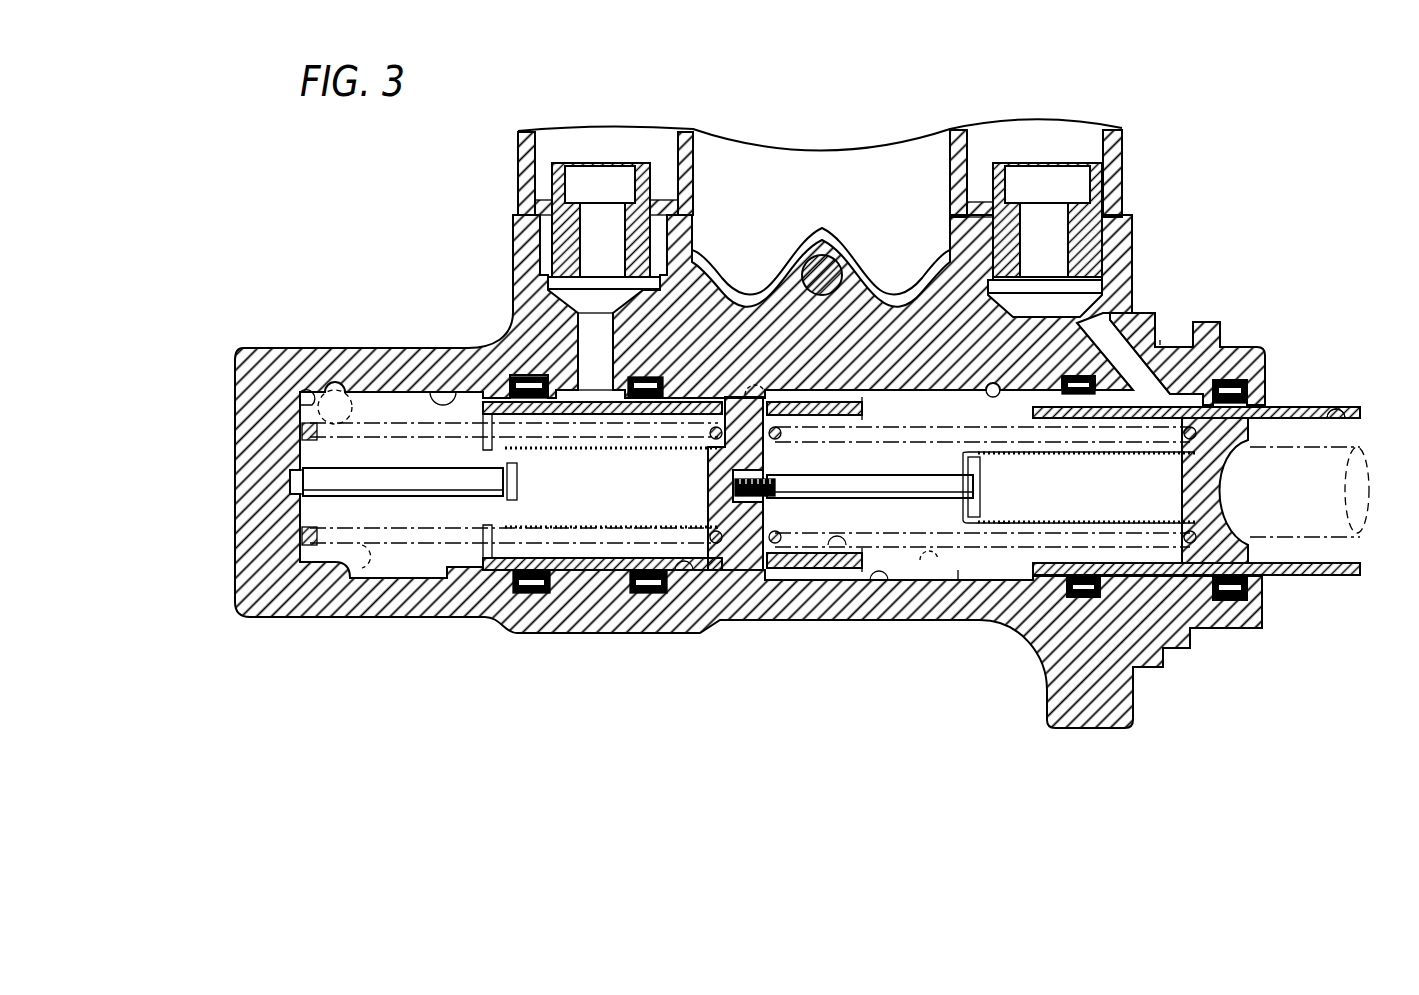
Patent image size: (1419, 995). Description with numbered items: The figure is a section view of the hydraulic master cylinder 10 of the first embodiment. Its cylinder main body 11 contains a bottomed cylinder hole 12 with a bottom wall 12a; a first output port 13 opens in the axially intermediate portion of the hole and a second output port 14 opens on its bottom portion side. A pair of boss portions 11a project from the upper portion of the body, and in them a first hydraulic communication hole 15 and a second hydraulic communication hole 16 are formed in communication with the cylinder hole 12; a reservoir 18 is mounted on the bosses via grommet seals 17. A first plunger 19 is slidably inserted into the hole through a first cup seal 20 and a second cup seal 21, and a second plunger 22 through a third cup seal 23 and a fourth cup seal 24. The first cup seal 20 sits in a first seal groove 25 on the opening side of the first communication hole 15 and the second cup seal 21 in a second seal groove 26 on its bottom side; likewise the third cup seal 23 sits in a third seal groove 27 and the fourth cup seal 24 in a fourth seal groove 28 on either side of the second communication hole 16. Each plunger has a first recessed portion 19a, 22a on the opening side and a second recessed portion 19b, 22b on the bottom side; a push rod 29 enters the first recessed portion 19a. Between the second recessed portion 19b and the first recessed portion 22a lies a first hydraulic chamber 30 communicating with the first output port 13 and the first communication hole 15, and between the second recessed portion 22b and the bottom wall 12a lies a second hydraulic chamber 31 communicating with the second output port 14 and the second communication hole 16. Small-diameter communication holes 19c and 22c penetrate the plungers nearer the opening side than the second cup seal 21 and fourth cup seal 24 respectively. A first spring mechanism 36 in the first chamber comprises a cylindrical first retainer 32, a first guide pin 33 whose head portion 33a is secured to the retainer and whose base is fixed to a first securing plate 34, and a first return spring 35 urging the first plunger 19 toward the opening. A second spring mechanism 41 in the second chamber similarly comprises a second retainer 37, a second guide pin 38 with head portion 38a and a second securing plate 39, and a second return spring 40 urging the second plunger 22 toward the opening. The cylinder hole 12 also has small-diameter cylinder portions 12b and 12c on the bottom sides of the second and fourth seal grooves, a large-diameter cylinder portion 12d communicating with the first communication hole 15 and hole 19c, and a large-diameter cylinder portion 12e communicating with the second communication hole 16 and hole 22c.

The hydraulic master cylinder 10 is at (1278, 152).
The cylinder main body 11 is at (292, 338).
The boss portion 11a is at (520, 262).
The cylinder hole 12 is at (880, 588).
The bottom wall 12a is at (298, 398).
The small-diameter cylinder portion 12b is at (992, 392).
The small-diameter cylinder portion 12c is at (443, 392).
The large-diameter cylinder portion 12d is at (1188, 359).
The large-diameter cylinder portion 12e is at (603, 578).
The first output port 13 is at (748, 392).
The second output port 14 is at (336, 390).
The first hydraulic communication hole 15 is at (1120, 320).
The second hydraulic communication hole 16 is at (590, 350).
The grommet seal 17 is at (642, 205).
The reservoir 18 is at (1128, 148).
The first plunger 19 is at (1312, 398).
The first recessed portion 19a is at (1347, 426).
The second recessed portion 19b is at (1150, 578).
The small-diameter communication hole 19c is at (1143, 580).
The first cup seal 20 is at (1230, 380).
The second cup seal 21 is at (1075, 377).
The second plunger 22 is at (760, 574).
The first recessed portion 22a is at (835, 576).
The second recessed portion 22b is at (680, 572).
The small-diameter communication hole 22c is at (568, 575).
The third cup seal 23 is at (645, 595).
The fourth cup seal 24 is at (522, 595).
The first seal groove 25 is at (1245, 590).
The second seal groove 26 is at (1075, 597).
The third seal groove 27 is at (647, 378).
The fourth seal groove 28 is at (512, 378).
The push rod 29 is at (1355, 498).
The first hydraulic chamber 30 is at (952, 582).
The second hydraulic chamber 31 is at (405, 572).
The first retainer 32 is at (1085, 458).
The first guide pin 33 is at (880, 470).
The head portion 33a is at (983, 482).
The first securing plate 34 is at (772, 492).
The first return spring 35 is at (928, 578).
The first spring mechanism 36 is at (1000, 530).
The second retainer 37 is at (612, 455).
The second guide pin 38 is at (382, 463).
The head portion 38a is at (518, 480).
The second securing plate 39 is at (298, 510).
The second return spring 40 is at (358, 578).
The second spring mechanism 41 is at (497, 528).